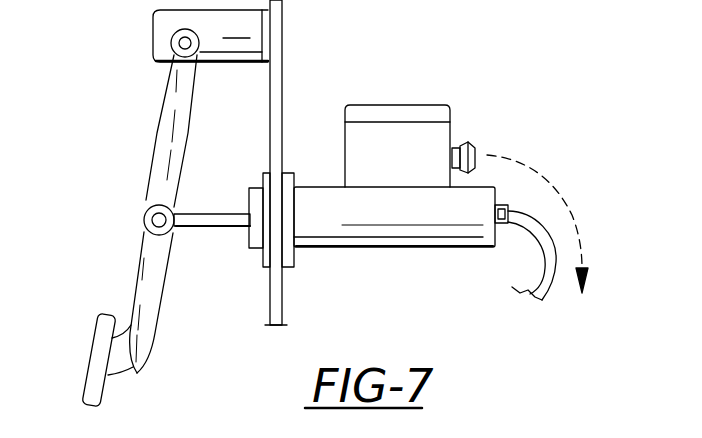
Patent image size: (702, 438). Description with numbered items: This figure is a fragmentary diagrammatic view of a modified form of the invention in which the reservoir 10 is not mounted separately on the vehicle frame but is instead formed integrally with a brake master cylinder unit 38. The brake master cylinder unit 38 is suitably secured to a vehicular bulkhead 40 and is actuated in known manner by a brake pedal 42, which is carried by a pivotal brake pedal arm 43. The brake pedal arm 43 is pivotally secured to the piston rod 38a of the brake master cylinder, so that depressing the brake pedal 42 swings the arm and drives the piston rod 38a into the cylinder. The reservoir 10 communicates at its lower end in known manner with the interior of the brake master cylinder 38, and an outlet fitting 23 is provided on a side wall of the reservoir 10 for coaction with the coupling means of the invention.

The reservoir 10 is at (413, 181).
The outlet fitting 23 is at (466, 128).
The brake master cylinder unit 38 is at (406, 238).
The piston rod 38a is at (192, 227).
The vehicular bulkhead 40 is at (283, 50).
The brake pedal 42 is at (90, 335).
The brake pedal arm 43 is at (140, 370).